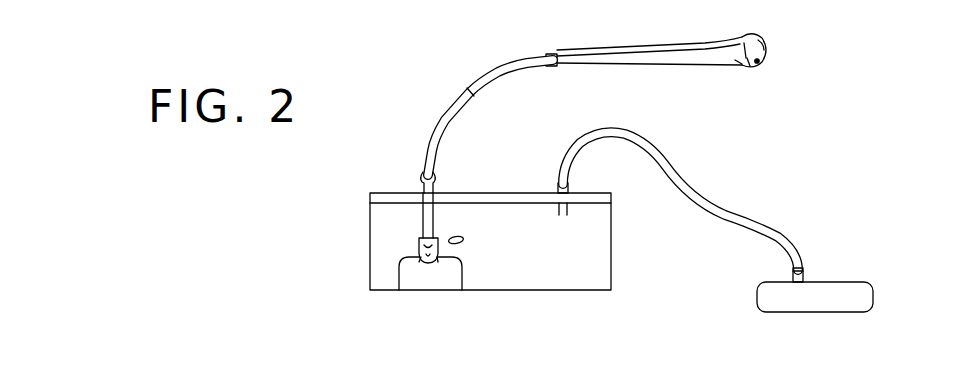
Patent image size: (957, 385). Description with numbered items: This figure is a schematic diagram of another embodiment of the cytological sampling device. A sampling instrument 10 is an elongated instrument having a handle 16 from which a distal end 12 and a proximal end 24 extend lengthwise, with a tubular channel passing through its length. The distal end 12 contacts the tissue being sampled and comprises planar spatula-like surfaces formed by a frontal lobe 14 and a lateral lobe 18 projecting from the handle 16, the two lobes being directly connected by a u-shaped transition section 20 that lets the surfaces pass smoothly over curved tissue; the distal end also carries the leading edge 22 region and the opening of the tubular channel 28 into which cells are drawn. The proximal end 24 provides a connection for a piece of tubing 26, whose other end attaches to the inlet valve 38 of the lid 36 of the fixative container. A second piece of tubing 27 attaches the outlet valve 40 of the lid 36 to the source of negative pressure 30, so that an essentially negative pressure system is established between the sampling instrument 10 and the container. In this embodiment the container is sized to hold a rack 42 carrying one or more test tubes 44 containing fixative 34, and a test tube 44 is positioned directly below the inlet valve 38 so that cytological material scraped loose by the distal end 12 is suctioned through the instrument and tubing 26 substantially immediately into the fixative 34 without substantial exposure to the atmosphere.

The sampling instrument 10 is at (586, 39).
The distal end 12 is at (741, 64).
The frontal lobe 14 is at (764, 37).
The handle 16 is at (653, 62).
The lateral lobe 18 is at (749, 67).
The transition section 20 is at (761, 62).
The tip edge 22 is at (730, 41).
The proximal end 24 is at (548, 67).
The tubing 26 is at (442, 110).
The second piece of tubing 27 is at (656, 151).
The opening of the tubular channel 28 is at (766, 42).
The source of negative pressure 30 is at (870, 296).
The fixative 34 is at (419, 262).
The lid 36 is at (380, 198).
The inlet valve 38 is at (425, 186).
The outlet valve 40 is at (568, 188).
The rack 42 is at (405, 275).
The test tube 44 is at (418, 245).